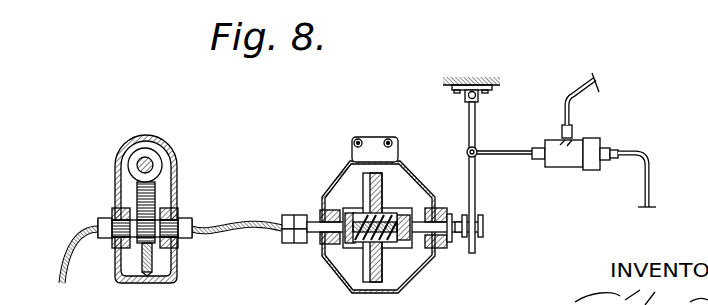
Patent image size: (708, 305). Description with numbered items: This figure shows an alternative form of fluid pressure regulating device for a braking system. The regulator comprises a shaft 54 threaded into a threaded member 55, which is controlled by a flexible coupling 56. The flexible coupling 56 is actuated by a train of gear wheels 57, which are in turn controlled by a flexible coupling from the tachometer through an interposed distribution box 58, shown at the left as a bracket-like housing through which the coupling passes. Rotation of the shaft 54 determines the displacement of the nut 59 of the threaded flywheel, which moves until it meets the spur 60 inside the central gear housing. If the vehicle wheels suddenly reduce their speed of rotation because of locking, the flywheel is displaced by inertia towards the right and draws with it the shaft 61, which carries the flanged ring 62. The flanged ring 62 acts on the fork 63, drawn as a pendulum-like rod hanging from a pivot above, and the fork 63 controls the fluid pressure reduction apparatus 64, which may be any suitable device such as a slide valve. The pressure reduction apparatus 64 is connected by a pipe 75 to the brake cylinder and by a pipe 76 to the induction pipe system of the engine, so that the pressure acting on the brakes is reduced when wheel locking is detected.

The shaft 54 is at (327, 260).
The threaded member 55 is at (395, 212).
The flexible coupling 56 is at (238, 218).
The train of gear wheels 57 is at (153, 160).
The distribution box 58 is at (190, 267).
The nut 59 is at (380, 281).
The spur 60 is at (343, 213).
The shaft 61 is at (458, 236).
The flanged ring 62 is at (481, 239).
The fork 63 is at (476, 205).
The fluid pressure reduction apparatus 64 is at (568, 162).
The pipe 75 is at (568, 112).
The pipe 76 is at (643, 192).